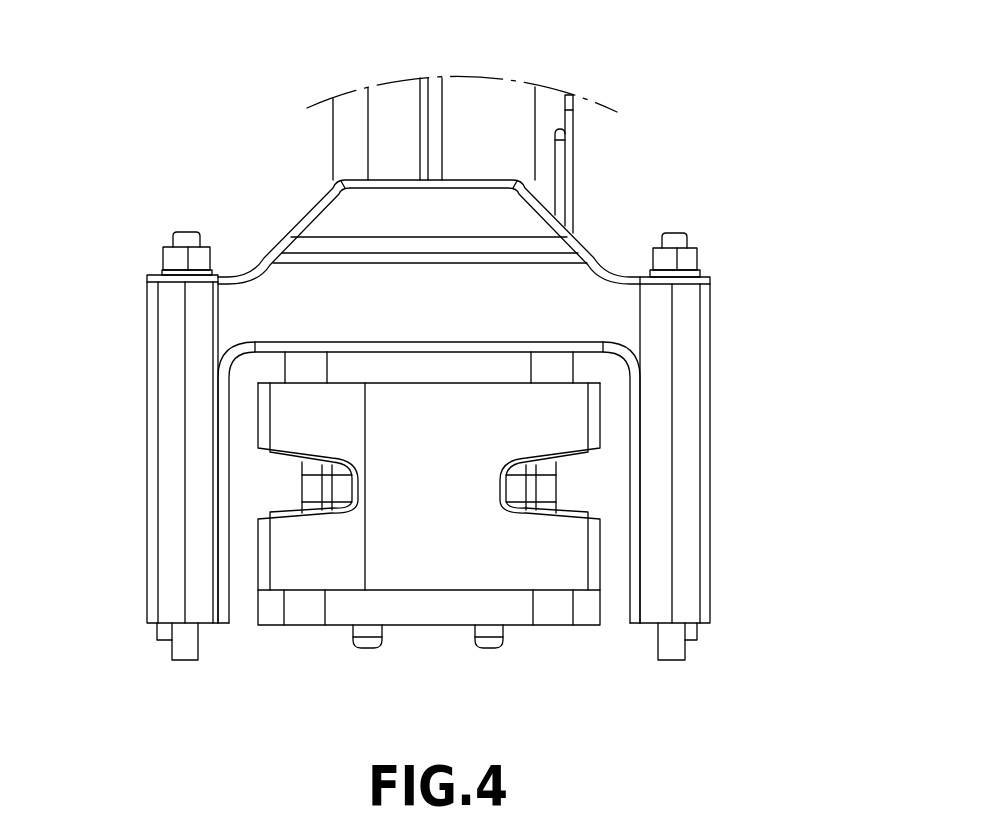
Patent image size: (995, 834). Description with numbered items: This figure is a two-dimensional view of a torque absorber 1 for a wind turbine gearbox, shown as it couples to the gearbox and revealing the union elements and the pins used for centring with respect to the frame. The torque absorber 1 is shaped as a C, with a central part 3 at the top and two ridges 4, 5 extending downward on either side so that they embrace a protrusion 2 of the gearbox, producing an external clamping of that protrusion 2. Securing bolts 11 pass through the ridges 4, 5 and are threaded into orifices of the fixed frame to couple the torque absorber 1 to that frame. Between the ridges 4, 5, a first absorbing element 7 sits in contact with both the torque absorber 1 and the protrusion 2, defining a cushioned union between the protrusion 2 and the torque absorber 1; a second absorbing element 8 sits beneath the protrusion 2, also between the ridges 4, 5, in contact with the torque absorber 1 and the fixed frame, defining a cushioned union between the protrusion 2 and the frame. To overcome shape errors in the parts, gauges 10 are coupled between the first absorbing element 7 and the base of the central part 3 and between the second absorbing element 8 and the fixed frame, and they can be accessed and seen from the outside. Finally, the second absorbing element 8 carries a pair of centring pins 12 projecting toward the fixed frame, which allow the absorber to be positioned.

The torque absorber 1 is at (240, 270).
The protrusion 2 is at (447, 423).
The central part 3 is at (365, 290).
The ridge 4 is at (182, 460).
The ridge 5 is at (683, 484).
The first absorbing element 7 is at (402, 368).
The second absorbing element 8 is at (430, 610).
The gauge 10 is at (345, 343).
The securing bolt 11 is at (168, 254).
The centring pin 12 is at (369, 649).